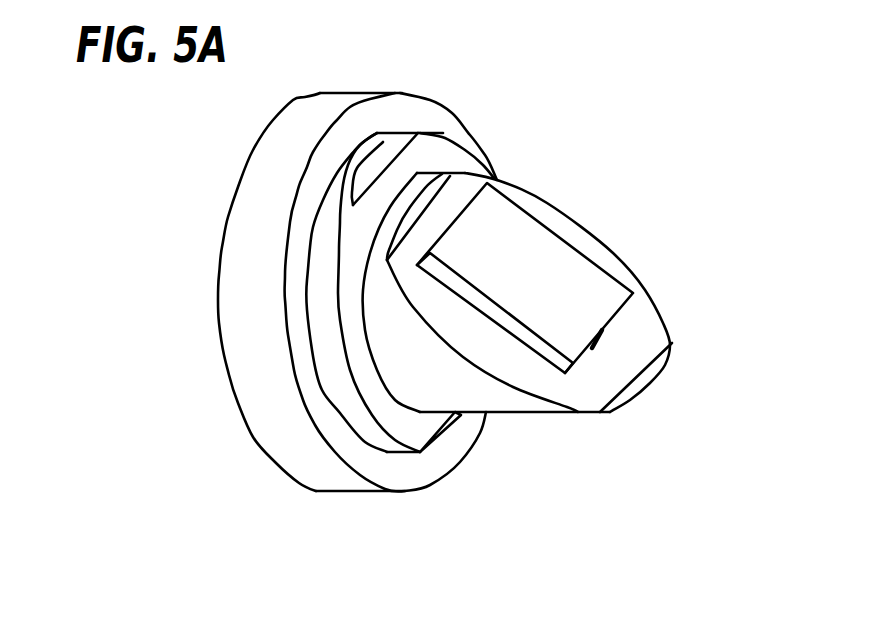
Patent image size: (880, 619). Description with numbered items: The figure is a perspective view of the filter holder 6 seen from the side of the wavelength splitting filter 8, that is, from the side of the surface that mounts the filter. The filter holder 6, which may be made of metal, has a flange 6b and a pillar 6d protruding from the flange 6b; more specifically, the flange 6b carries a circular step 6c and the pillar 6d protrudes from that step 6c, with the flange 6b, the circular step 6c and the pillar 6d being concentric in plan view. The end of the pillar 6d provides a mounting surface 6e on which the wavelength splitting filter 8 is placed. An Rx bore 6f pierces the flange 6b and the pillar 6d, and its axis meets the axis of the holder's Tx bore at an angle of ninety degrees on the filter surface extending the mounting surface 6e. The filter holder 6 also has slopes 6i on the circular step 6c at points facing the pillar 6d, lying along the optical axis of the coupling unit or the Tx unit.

The filter holder 6 is at (586, 86).
The flange 6b is at (271, 428).
The circular step 6c is at (372, 432).
The pillar 6d is at (517, 402).
The mounting surface 6e is at (645, 308).
The Rx bore 6f is at (597, 343).
The slopes 6i is at (380, 153).
The wavelength splitting filter 8 is at (540, 247).